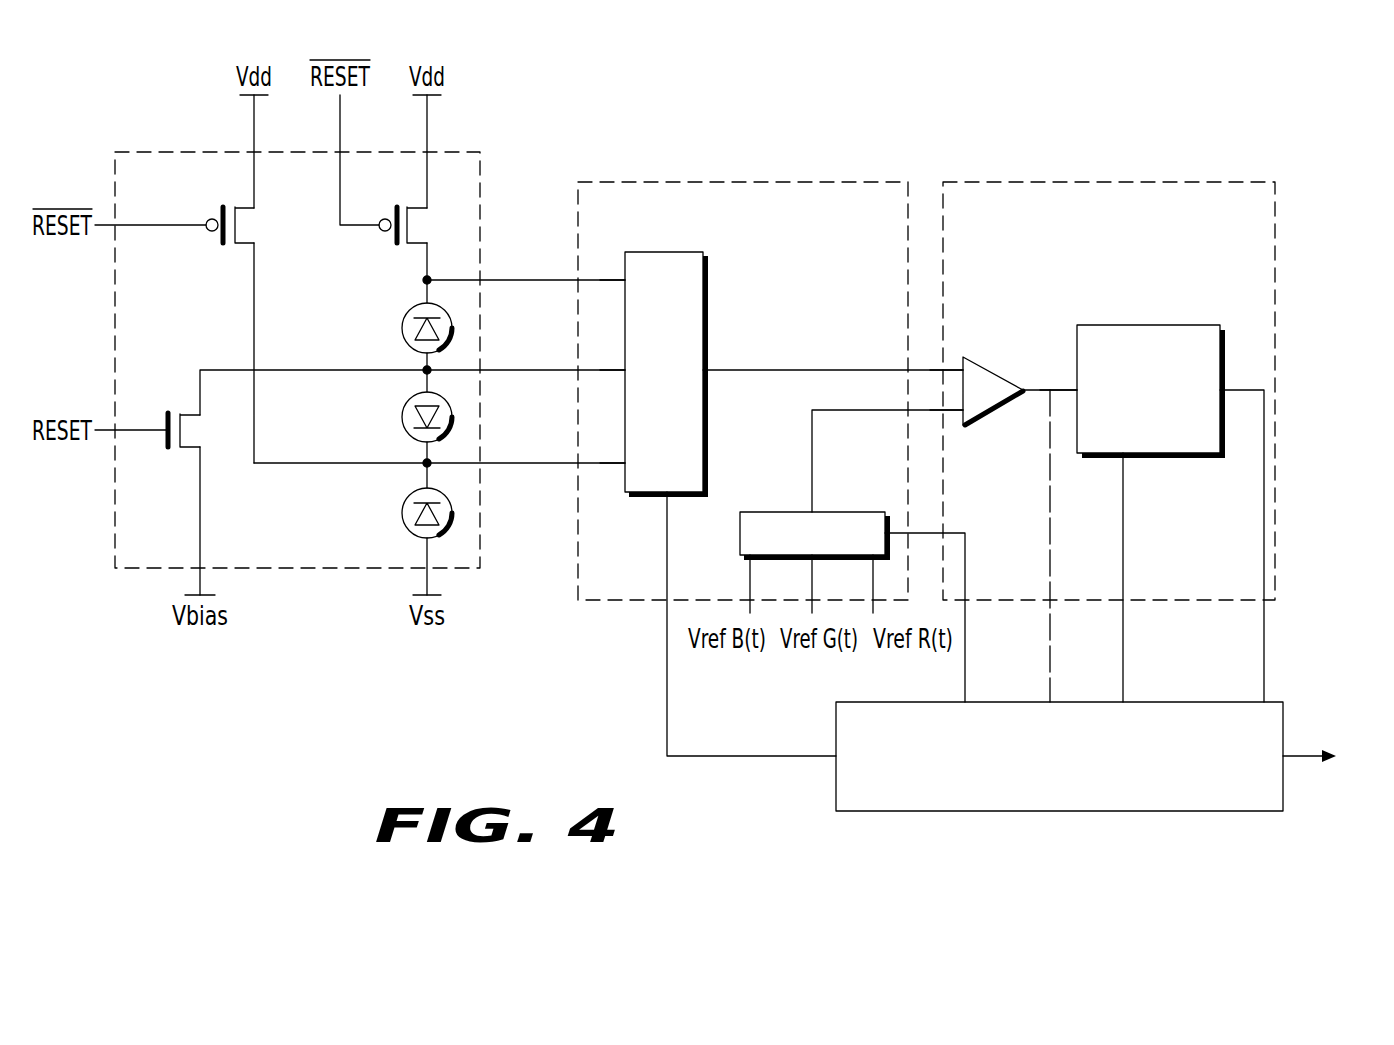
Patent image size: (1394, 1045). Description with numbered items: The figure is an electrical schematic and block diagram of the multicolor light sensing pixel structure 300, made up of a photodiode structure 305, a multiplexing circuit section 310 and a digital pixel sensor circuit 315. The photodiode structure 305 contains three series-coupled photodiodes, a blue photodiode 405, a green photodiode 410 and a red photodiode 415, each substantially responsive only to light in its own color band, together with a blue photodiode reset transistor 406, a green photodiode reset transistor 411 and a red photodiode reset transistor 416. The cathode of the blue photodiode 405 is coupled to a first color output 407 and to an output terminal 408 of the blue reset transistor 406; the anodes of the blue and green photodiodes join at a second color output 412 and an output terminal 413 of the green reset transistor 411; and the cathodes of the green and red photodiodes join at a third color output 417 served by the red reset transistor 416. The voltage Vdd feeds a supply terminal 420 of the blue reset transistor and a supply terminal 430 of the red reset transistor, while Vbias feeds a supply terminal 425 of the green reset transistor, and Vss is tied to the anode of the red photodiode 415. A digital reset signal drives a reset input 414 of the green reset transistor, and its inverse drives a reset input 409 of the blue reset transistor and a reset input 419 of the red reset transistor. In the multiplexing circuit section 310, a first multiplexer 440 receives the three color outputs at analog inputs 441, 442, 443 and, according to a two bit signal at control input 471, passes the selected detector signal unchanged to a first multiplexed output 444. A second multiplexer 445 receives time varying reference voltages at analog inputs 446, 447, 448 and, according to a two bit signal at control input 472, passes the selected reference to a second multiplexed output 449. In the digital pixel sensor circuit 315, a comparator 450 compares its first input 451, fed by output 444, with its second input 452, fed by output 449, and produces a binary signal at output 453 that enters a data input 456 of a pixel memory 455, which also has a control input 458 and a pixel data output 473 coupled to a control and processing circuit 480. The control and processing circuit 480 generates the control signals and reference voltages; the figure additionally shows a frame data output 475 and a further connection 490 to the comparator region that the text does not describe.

The multicolor light sensing pixel structure 300 is at (703, 73).
The photodiode structure 305 is at (450, 152).
The multiplexing circuit section 310 is at (760, 182).
The digital pixel sensor circuit 315 is at (1095, 182).
The blue photodiode 405 is at (402, 328).
The blue photodiode reset transistor 406 is at (422, 229).
The first color output 407 is at (456, 280).
The output terminal of the blue photodiode reset transistor 408 is at (427, 270).
The reset input of the blue reset transistor 409 is at (340, 122).
The green photodiode 410 is at (402, 417).
The green photodiode reset transistor 411 is at (198, 433).
The second color output 412 is at (456, 370).
The output terminal of the green reset transistor 413 is at (222, 370).
The reset input of the green reset transistor 414 is at (137, 430).
The red photodiode 415 is at (402, 513).
The red photodiode reset transistor 416 is at (248, 229).
The third color output 417 is at (456, 463).
The reset input of the red reset transistor 419 is at (190, 225).
The supply terminal of the blue reset transistor 420 is at (427, 122).
The supply terminal of the green reset transistor 425 is at (200, 512).
The supply terminal of the red reset transistor 430 is at (254, 122).
The first multiplexer 440 is at (665, 252).
The first analog input of the first multiplexer 441 is at (600, 281).
The second analog input of the first multiplexer 442 is at (600, 371).
The third analog input of the first multiplexer 443 is at (600, 464).
The first multiplexed output 444 is at (735, 370).
The second multiplexer 445 is at (795, 512).
The first analog input of the second multiplexer 446 is at (750, 582).
The second analog input of the second multiplexer 447 is at (812, 582).
The third analog input of the second multiplexer 448 is at (873, 582).
The second multiplexed output 449 is at (812, 440).
The comparator 450 is at (980, 362).
The first input of the comparator 451 is at (950, 370).
The second input of the comparator 452 is at (955, 416).
The output of the comparator 453 is at (1035, 394).
The pixel memory 455 is at (1175, 325).
The data input of the pixel memory 456 is at (1057, 388).
The control input of the pixel memory 458 is at (1123, 485).
The control input of the first multiplexer 471 is at (667, 552).
The control input of the second multiplexer 472 is at (950, 533).
The pixel data output 473 is at (1255, 390).
The frame data output 475 is at (1305, 755).
The control and processing circuit 480 is at (836, 795).
The comparator control line 490 is at (1050, 485).